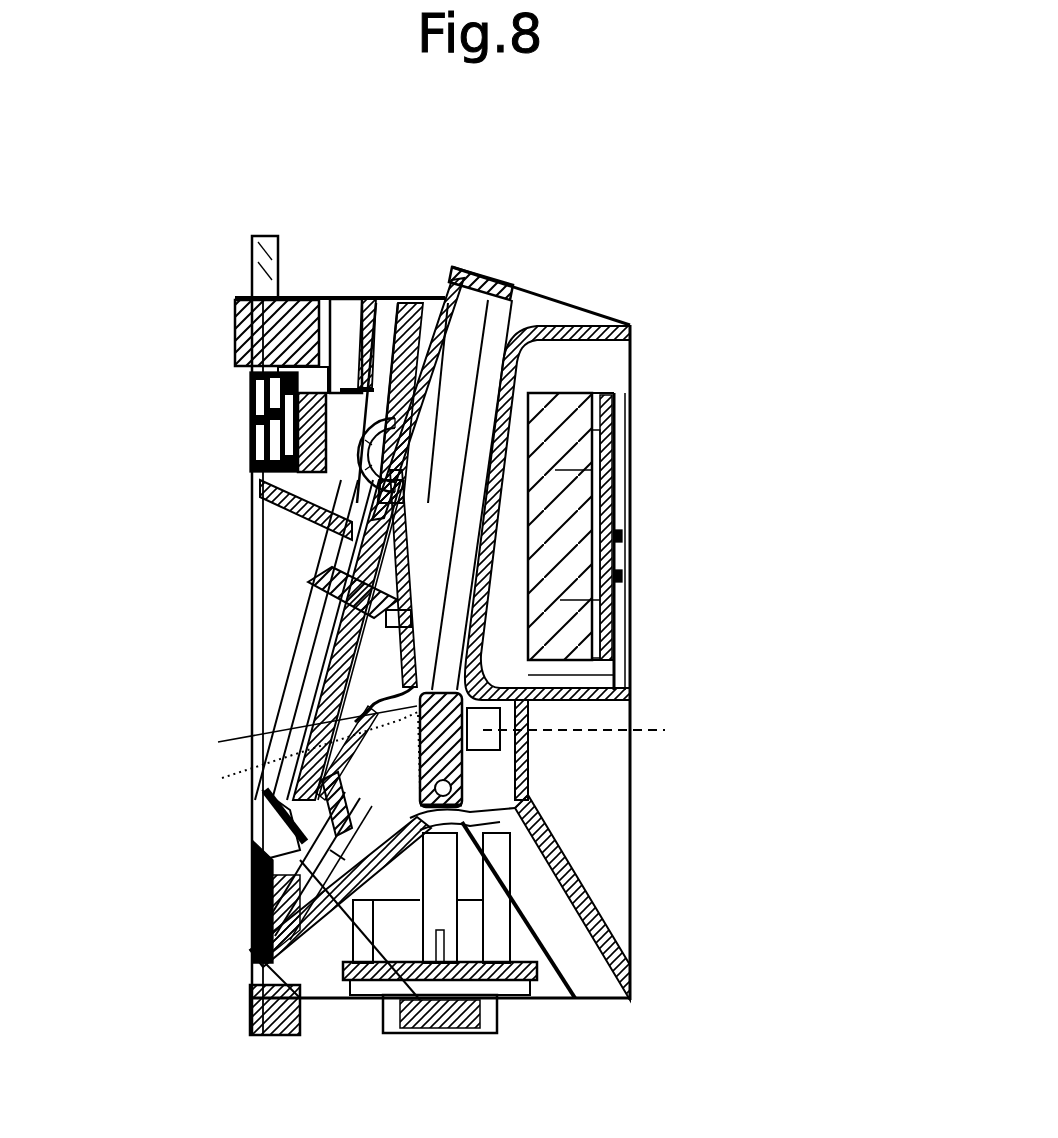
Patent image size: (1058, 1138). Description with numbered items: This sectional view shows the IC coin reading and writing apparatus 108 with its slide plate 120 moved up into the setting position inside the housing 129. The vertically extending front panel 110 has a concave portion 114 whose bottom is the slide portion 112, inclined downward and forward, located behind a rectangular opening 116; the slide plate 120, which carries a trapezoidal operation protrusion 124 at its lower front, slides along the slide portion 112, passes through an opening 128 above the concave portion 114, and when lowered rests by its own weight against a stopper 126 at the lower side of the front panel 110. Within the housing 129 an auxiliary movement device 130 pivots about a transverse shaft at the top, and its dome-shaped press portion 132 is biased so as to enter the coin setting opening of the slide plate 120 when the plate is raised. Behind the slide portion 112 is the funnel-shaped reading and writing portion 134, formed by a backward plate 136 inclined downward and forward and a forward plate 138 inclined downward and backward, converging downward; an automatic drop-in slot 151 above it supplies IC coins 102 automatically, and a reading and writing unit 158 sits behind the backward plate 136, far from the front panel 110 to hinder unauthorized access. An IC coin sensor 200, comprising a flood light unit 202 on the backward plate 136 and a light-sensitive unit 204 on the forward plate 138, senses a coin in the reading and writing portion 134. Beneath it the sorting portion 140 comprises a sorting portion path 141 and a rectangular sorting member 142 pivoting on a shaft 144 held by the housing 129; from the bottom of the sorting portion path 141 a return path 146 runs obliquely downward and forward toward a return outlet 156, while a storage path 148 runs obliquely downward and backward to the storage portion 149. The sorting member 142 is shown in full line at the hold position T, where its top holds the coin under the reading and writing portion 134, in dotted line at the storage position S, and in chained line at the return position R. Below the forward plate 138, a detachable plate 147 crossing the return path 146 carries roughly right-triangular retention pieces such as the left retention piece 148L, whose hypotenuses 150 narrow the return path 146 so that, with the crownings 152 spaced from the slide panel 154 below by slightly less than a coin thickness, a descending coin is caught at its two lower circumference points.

The IC coin reading and writing apparatus 108 is at (346, 210).
The front panel 110 is at (252, 268).
The slide portion 112 is at (300, 690).
The concave portion 114 is at (280, 665).
The rectangular opening 116 is at (255, 604).
The slide plate 120 is at (470, 356).
The operation protrusion 124 is at (318, 583).
The stopper 126 is at (270, 800).
The opening 128 is at (353, 530).
The housing 129 is at (518, 326).
The auxiliary movement device 130 is at (388, 372).
The press portion 132 is at (440, 445).
The reading and writing portion 134 is at (595, 488).
The backward plate 136 is at (606, 573).
The forward plate 138 is at (612, 650).
The sorting portion 140 is at (782, 782).
The sorting portion path 141 is at (470, 712).
The sorting member 142 is at (533, 752).
The shaft 144 is at (468, 793).
The return path 146 is at (348, 918).
The plate 147 is at (270, 874).
The storage path 148 is at (548, 896).
The left retention piece 148L is at (280, 902).
The storage portion 149 is at (595, 1005).
The hypotenuses 150 is at (310, 953).
The automatic drop-in slot 151 is at (518, 327).
The crownings 152 is at (257, 990).
The slide panel 154 is at (473, 983).
The return outlet 156 is at (252, 958).
The reading and writing unit 158 is at (557, 470).
The IC coin 102 is at (601, 533).
The IC coin sensor 200 is at (784, 608).
The flood light unit 202 is at (612, 610).
The light-sensitive unit 204 is at (383, 617).
The return position R is at (587, 728).
The storage position S is at (297, 755).
The hold position T is at (300, 733).